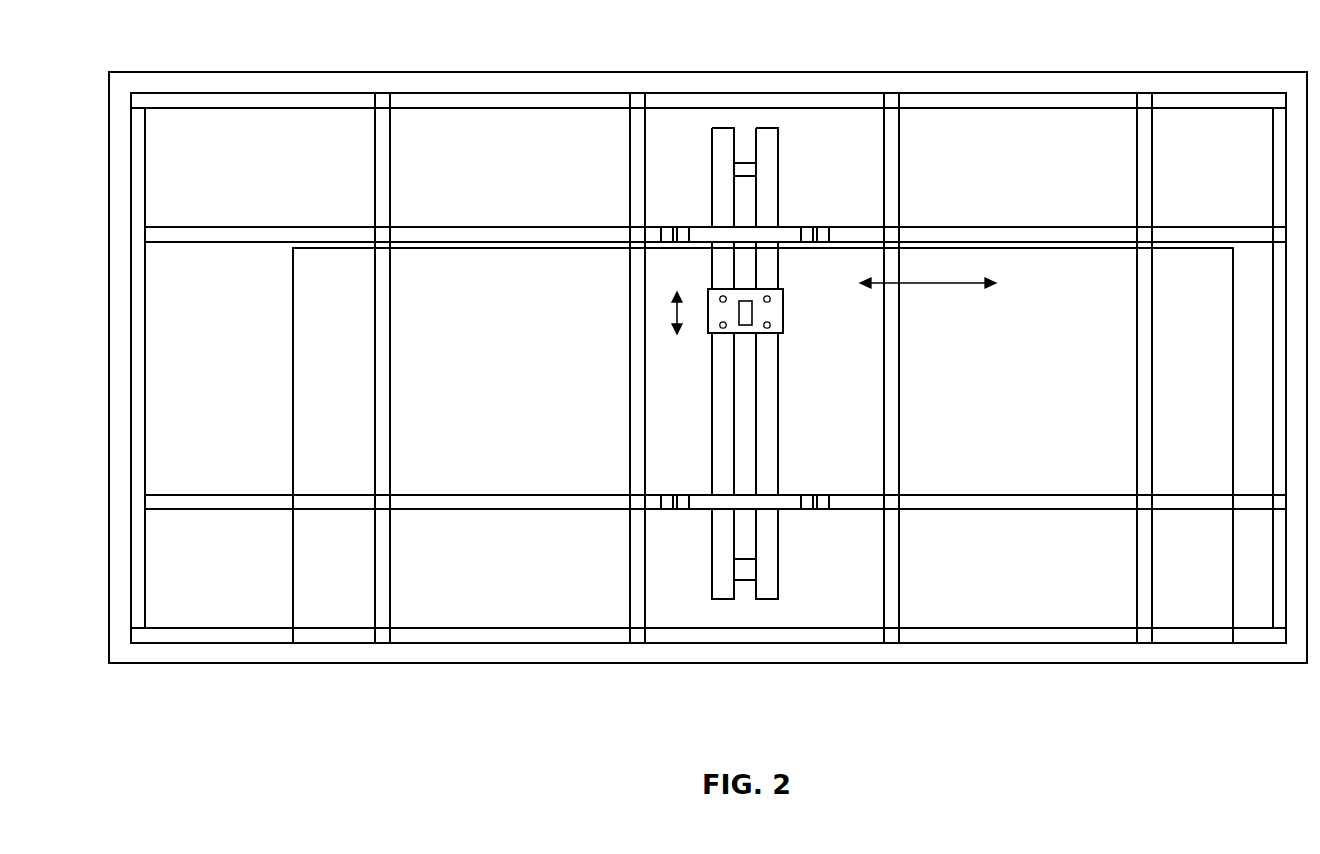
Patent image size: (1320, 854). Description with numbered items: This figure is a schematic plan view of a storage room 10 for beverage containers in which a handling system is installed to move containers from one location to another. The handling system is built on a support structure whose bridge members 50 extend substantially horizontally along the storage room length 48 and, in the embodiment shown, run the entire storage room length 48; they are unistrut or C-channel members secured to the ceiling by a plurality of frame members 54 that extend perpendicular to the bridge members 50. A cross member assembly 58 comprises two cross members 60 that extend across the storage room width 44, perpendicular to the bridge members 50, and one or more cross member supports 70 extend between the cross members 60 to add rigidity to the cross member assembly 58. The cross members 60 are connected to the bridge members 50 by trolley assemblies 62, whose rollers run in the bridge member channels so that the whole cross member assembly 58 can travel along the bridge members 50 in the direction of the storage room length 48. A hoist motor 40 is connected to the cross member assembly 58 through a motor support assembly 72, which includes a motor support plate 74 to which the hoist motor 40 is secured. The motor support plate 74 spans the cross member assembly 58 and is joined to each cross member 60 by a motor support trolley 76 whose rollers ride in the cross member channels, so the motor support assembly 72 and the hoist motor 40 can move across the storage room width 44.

The storage room 10 is at (232, 72).
The hoist motor 40 is at (788, 302).
The storage room width 44 is at (677, 313).
The storage room length 48 is at (958, 285).
The bridge member 50 is at (232, 226).
The frame member 54 is at (628, 128).
The cross member assembly 58 is at (746, 332).
The cross member 60 is at (712, 408).
The trolley assembly 62 is at (680, 227).
The cross member support 70 is at (738, 163).
The motor support assembly 72 is at (825, 318).
The motor support plate 74 is at (745, 288).
The motor support trolley 76 is at (772, 326).